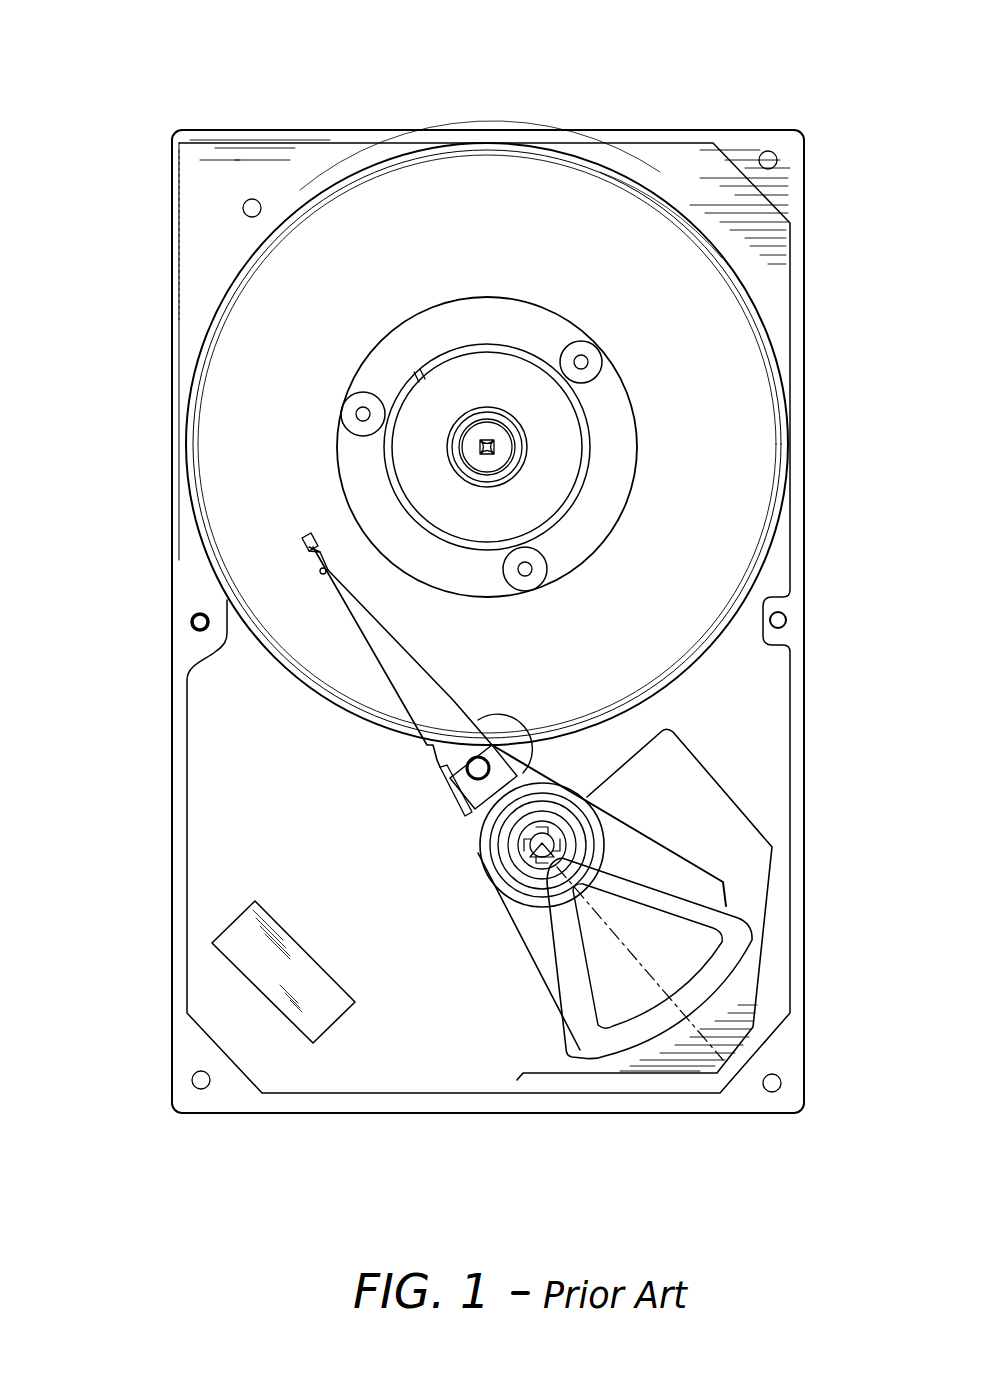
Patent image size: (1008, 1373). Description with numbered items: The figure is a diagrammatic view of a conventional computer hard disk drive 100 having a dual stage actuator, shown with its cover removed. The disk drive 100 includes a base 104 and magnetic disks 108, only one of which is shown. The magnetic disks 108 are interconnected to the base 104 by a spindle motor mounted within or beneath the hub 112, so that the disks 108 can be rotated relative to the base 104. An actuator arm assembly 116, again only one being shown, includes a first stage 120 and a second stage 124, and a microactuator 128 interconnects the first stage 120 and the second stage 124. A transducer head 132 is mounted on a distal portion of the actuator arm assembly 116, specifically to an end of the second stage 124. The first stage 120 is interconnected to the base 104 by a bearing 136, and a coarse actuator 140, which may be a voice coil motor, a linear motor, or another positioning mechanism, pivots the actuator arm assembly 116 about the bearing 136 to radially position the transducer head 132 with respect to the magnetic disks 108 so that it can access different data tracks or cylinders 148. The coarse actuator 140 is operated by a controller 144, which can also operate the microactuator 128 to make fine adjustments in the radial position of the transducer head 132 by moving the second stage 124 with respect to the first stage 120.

The disk drive 100 is at (497, 105).
The base 104 is at (770, 712).
The magnetic disks 108 is at (753, 412).
The hub 112 is at (470, 460).
The actuator arm assemblies 116 is at (362, 647).
The first stage 120 is at (392, 690).
The second stage 124 is at (312, 555).
The microactuators 128 is at (315, 574).
The transducer heads 132 is at (305, 541).
The bearing 136 is at (542, 852).
The coarse actuator 140 is at (608, 1042).
The controller 144 is at (262, 983).
The data tracks 148 is at (400, 180).